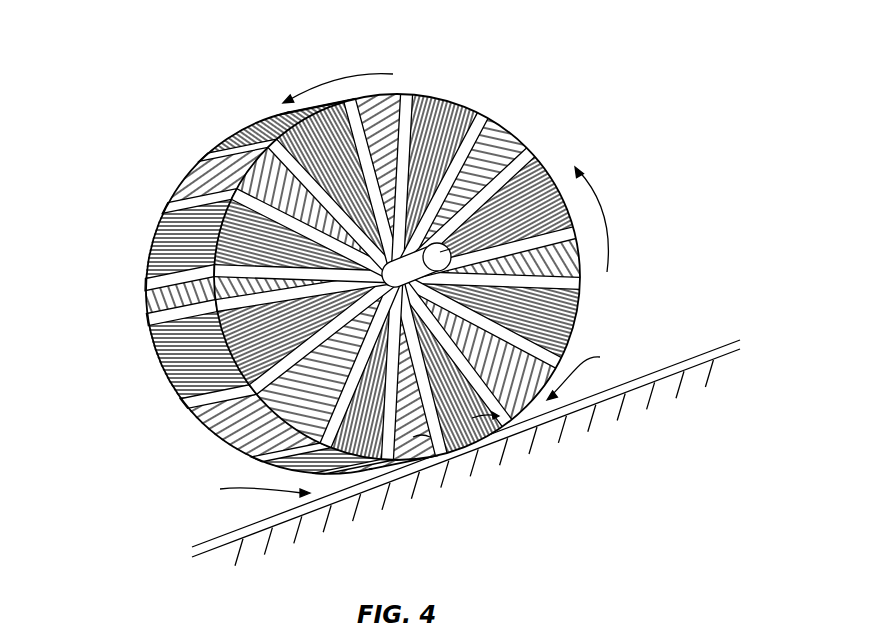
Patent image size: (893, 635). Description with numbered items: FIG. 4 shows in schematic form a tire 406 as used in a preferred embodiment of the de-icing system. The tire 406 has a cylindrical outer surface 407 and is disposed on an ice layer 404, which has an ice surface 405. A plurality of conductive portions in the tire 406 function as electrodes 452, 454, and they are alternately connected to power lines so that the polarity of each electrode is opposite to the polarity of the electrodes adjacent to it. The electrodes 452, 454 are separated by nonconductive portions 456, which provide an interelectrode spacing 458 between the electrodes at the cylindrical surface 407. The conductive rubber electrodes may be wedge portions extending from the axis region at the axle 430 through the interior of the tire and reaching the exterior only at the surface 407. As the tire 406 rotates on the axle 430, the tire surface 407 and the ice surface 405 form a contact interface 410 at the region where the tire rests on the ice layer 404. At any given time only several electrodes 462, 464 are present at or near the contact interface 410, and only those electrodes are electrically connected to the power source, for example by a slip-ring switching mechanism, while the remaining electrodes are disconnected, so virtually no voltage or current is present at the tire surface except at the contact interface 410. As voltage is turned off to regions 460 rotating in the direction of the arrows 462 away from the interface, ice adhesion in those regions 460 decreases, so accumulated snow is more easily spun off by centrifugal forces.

The ice layer 404 is at (492, 420).
The ice surface 405 is at (671, 362).
The tire 406 is at (488, 124).
The cylindrical outer surface 407 is at (482, 122).
The contact interface 410 is at (408, 424).
The axle 430 is at (359, 266).
The electrode 452 is at (192, 172).
The electrode 454 is at (160, 262).
The nonconductive portion 456 is at (536, 166).
The interelectrode spacing 458 is at (180, 204).
The region 460 is at (556, 333).
The arrows 462 is at (344, 74).
The electrode 464 is at (384, 452).